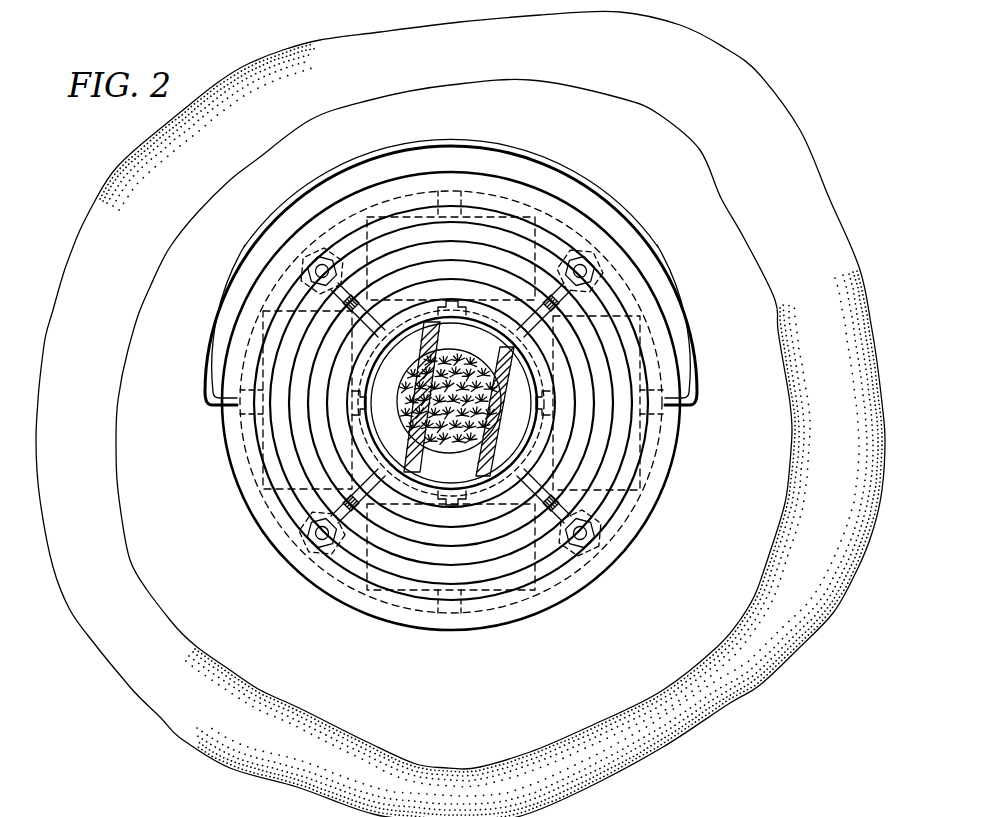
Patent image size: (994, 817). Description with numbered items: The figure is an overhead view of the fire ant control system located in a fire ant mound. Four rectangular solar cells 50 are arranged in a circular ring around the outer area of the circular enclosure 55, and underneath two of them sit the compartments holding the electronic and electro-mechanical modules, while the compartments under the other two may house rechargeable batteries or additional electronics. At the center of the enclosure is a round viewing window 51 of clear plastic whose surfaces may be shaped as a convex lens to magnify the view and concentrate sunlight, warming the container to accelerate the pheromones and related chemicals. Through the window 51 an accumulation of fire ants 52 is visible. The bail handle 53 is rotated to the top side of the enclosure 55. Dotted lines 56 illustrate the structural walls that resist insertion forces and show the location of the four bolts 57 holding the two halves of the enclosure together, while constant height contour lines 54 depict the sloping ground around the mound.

The rectangular solar cells 50 is at (420, 217).
The round viewing window 51 is at (368, 362).
The fire ants 52 is at (500, 360).
The bail handle 53 is at (462, 140).
The constant height contour lines 54 is at (722, 48).
The circular enclosure 55 is at (403, 632).
The dotted lines 56 is at (348, 596).
The bolts 57 is at (305, 262).